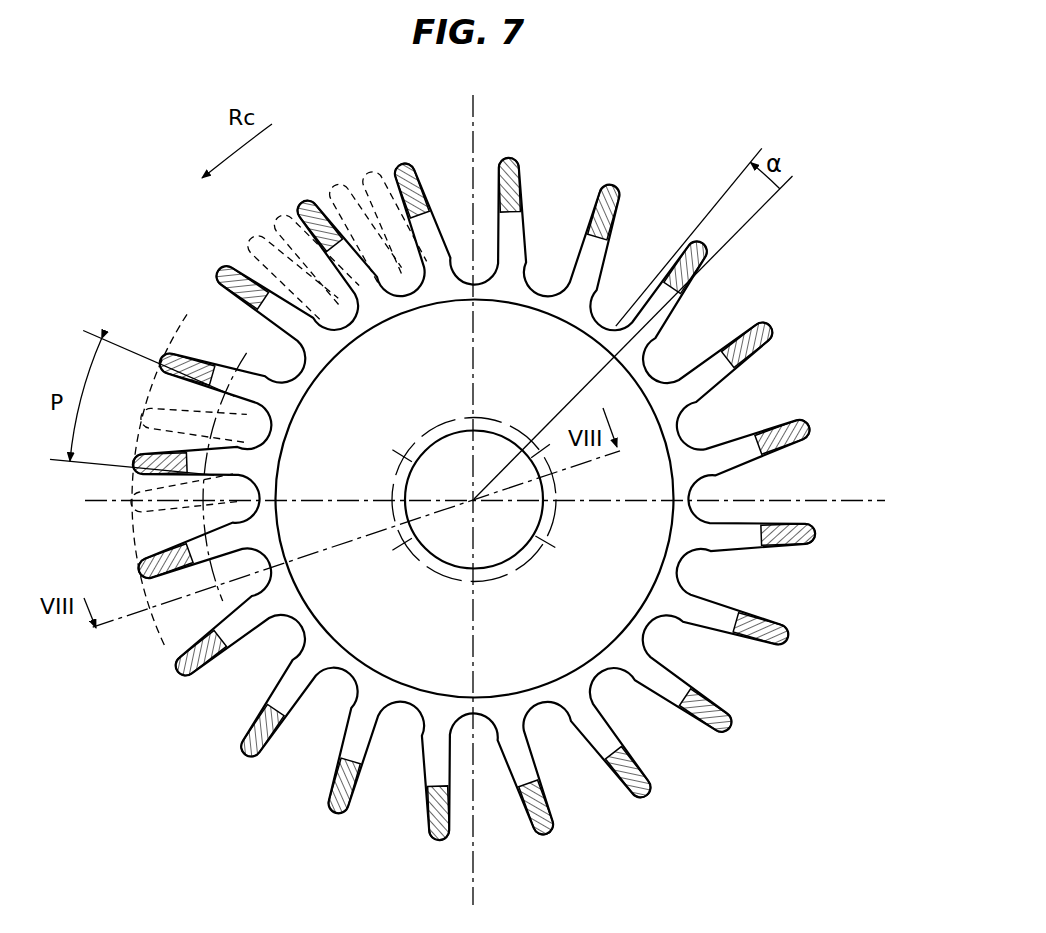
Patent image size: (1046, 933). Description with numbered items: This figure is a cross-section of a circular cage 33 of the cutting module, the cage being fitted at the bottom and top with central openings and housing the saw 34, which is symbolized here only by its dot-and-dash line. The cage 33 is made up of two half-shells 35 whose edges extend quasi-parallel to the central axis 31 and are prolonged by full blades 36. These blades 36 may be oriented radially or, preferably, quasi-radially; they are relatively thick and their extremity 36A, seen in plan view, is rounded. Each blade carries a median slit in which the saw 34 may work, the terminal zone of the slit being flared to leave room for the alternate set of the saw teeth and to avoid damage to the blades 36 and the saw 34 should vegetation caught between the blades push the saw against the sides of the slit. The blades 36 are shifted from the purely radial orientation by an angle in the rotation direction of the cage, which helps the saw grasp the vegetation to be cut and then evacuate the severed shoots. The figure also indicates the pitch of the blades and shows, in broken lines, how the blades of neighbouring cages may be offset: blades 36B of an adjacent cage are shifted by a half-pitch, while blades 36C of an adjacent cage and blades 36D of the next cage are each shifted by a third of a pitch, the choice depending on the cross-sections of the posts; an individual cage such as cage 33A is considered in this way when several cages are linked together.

The axis 31 is at (436, 552).
The circular cage 33 is at (701, 798).
The cage 33A is at (160, 632).
The saw 34 is at (176, 662).
The half-shell 35 is at (682, 418).
The blade 36 is at (776, 538).
The extremity of blade 36A is at (248, 748).
The blades of an adjacent cage 36B is at (130, 512).
The blades of an adjacent cage 36C is at (252, 238).
The blades of a further adjacent cage 36D is at (280, 216).